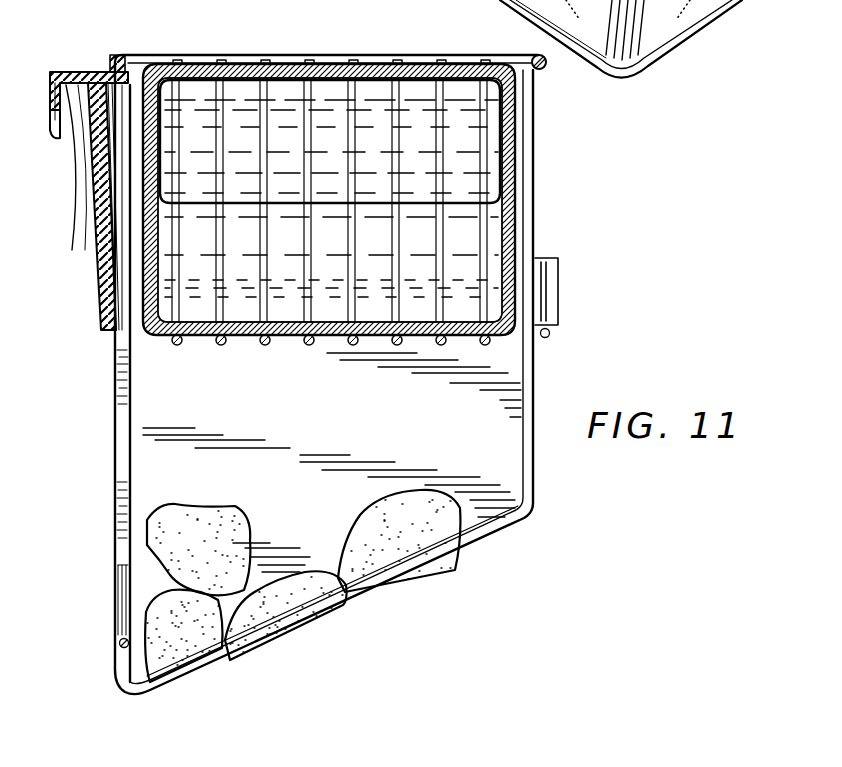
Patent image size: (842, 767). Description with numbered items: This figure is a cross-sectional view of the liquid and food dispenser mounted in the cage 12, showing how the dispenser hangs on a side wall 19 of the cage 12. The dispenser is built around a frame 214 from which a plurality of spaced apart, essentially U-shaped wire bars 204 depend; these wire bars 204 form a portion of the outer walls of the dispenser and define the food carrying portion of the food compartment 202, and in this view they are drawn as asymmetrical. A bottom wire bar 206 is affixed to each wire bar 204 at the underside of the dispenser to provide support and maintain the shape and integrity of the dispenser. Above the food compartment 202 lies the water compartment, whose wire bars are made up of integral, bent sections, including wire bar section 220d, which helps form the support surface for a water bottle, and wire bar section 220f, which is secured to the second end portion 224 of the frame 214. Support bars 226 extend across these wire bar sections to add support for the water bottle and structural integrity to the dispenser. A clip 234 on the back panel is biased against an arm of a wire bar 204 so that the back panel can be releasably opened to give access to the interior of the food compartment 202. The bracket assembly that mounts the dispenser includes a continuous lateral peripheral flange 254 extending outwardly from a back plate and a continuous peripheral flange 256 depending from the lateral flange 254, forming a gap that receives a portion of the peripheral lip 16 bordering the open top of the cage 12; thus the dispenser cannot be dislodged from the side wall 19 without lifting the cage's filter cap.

The cage 12 is at (724, 12).
The peripheral lip 16 is at (93, 222).
The side wall 19 is at (83, 206).
The food compartment 202 is at (398, 430).
The U-shaped wire bar 204 is at (537, 378).
The bottom wire bar 206 is at (352, 600).
The frame 214 is at (544, 67).
The wire bar section 220d is at (350, 305).
The wire bar section 220f is at (343, 107).
The second end portion 224 is at (262, 60).
The support bar 226 is at (455, 195).
The clip 234 is at (556, 260).
The lateral peripheral flange 254 is at (77, 72).
The peripheral flange 256 is at (50, 120).